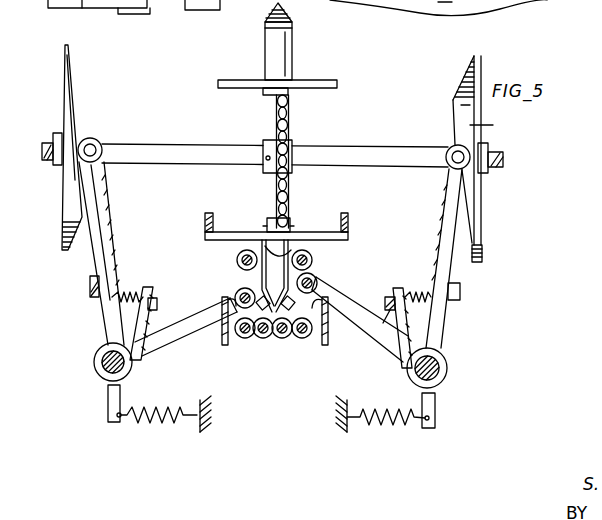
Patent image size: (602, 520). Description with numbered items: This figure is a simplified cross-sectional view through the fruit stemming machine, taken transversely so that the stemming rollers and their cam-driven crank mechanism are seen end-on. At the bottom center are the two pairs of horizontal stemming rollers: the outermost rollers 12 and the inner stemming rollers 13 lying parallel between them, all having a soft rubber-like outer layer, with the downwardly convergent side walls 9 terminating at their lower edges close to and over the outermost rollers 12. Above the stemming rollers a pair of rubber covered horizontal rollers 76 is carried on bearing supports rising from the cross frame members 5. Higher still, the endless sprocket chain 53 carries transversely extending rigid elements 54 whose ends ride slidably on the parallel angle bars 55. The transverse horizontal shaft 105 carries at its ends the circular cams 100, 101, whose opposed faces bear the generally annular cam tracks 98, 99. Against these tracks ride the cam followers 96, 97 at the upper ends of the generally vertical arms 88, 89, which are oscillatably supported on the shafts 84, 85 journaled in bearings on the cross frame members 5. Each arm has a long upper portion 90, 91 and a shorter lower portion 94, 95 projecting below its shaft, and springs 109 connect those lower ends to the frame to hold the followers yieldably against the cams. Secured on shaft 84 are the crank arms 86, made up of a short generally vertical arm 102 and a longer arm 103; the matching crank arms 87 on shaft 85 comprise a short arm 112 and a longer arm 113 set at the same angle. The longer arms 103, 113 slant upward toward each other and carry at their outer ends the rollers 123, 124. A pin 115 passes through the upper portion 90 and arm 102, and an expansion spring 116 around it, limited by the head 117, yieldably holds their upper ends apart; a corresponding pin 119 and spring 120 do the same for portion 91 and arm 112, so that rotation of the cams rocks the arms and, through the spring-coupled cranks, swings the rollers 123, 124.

The cross frame members 5 is at (345, 431).
The side walls 9 is at (305, 339).
The outermost rollers 12 is at (245, 339).
The inner stemming rollers 13 is at (281, 339).
The endless sprocket chain 53 is at (287, 108).
The rigid elements 54 is at (318, 230).
The angle bars 55 is at (206, 226).
The rubber covered horizontal rollers 76 is at (265, 246).
The shaft 84 is at (448, 365).
The shaft 85 is at (101, 360).
The crank arms 86 is at (366, 305).
The crank arms 87 is at (183, 314).
The arm 88 is at (432, 239).
The arm 89 is at (111, 223).
The upper portion 90 is at (450, 200).
The upper portion 91 is at (98, 204).
The lower portion 94 is at (436, 404).
The lower portion 95 is at (118, 397).
The cam follower 96 is at (452, 146).
The cam follower 97 is at (96, 139).
The cam track 98 is at (460, 92).
The cam track 99 is at (84, 185).
The circular cam 100 is at (486, 52).
The circular cam 101 is at (62, 63).
The short arm 102 is at (430, 332).
The longer arm 103 is at (379, 338).
The horizontal shaft 105 is at (361, 167).
The springs 109 is at (164, 421).
The short arm 112 is at (120, 321).
The longer arm 113 is at (196, 338).
The pin 115 is at (426, 293).
The expansion spring 116 is at (430, 313).
The head 117 is at (460, 288).
The pin 119 is at (100, 276).
The spring 120 is at (128, 293).
The roller 123 is at (313, 278).
The roller 124 is at (238, 290).